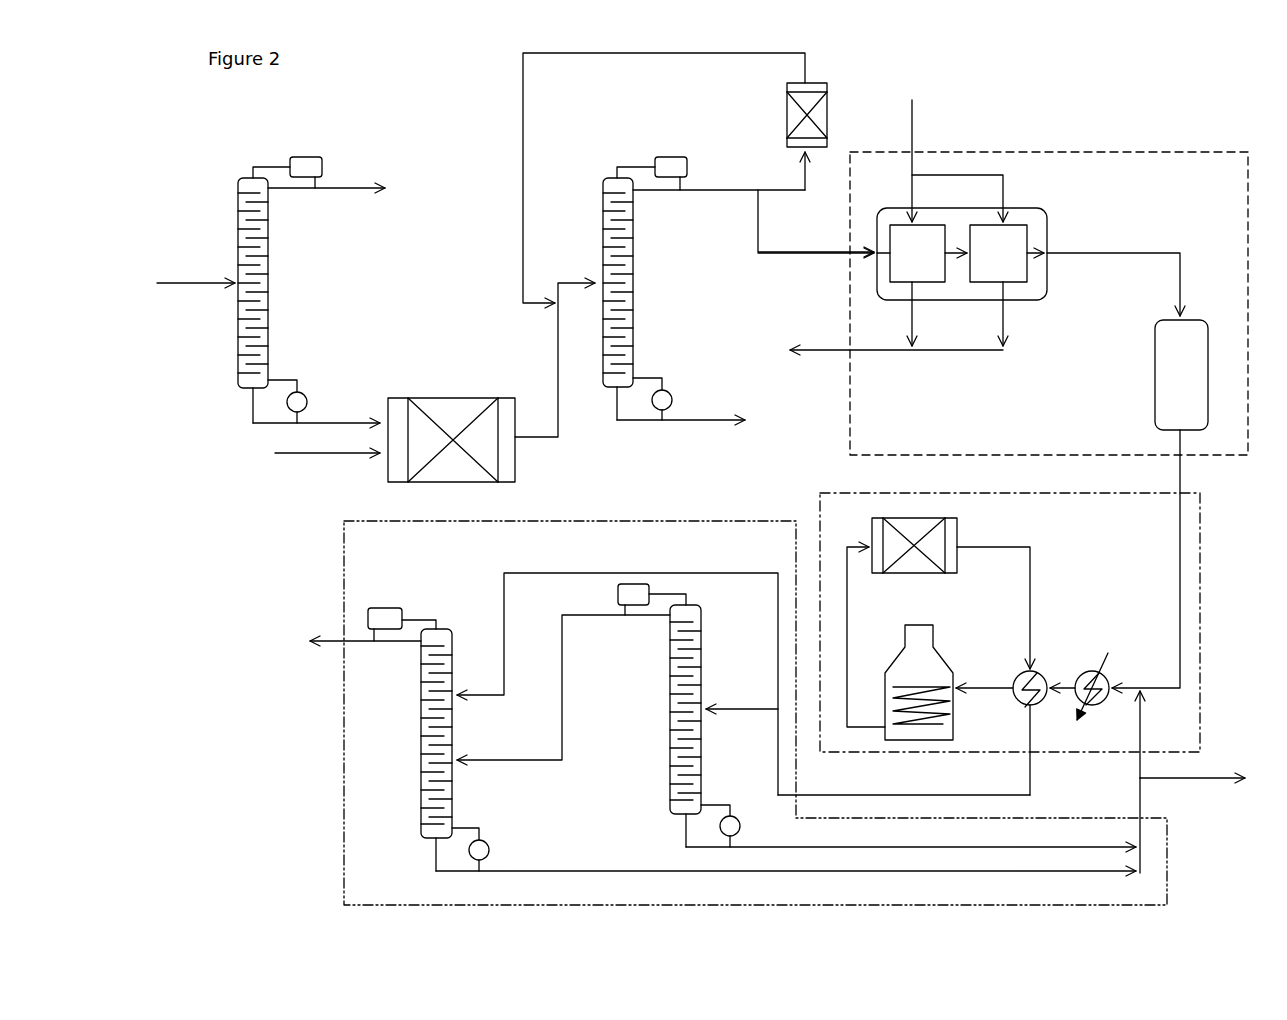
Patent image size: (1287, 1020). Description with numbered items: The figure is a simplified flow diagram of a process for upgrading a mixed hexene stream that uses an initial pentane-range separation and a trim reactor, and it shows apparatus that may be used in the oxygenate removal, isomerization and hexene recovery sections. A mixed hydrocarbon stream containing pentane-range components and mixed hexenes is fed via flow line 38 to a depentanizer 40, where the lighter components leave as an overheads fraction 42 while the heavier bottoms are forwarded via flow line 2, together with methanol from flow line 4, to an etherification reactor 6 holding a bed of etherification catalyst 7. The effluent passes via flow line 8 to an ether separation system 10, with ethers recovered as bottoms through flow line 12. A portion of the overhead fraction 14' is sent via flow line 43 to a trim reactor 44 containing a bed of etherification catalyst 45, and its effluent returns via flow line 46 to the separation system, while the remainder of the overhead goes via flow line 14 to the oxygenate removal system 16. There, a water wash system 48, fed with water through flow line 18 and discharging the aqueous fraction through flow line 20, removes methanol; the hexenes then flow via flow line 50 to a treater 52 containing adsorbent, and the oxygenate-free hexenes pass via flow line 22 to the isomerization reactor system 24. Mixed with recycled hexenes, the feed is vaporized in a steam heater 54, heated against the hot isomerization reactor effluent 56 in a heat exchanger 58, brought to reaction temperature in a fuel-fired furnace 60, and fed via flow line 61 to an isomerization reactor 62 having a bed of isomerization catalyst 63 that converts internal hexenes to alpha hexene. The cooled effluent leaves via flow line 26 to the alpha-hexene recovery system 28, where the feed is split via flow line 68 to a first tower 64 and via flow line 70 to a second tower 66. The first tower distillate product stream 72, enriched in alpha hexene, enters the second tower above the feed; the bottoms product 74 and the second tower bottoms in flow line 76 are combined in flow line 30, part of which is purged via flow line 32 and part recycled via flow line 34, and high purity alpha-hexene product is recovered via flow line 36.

The flow line 2 is at (326, 422).
The flow line 4 is at (320, 458).
The etherification reactor 6 is at (516, 402).
The bed of etherification catalyst 7 is at (448, 410).
The flow line 8 is at (554, 440).
The ether separation system 10 is at (603, 188).
The flow line 12 is at (708, 420).
The flow line 14 is at (816, 221).
The overhead fraction 14' is at (719, 170).
The oxygenate removal system 16 is at (1098, 148).
The flow line 18 is at (914, 134).
The flow line 20 is at (842, 354).
The flow line 22 is at (1183, 476).
The isomerization reactor system 24 is at (1204, 538).
The flow line 26 is at (1032, 788).
The 1-hexene recovery system 28 is at (802, 786).
The flow line 30 is at (1144, 808).
The flow line 32 is at (1216, 782).
The flow line 34 is at (1144, 730).
The flow line 36 is at (322, 638).
The flow line 38 is at (180, 286).
The depentanizer 40 is at (238, 186).
The overheads fraction 42 is at (352, 186).
The flow line 43 is at (815, 185).
The trim reactor 44 is at (787, 130).
The bed of etherification catalyst 45 is at (828, 122).
The flow line 46 is at (810, 70).
The water wash system 48 is at (1047, 218).
The flow line 50 is at (1122, 254).
The treater 52 is at (1181, 375).
The steam heater 54 is at (1092, 670).
The isomerization reactor effluent 56 is at (1034, 612).
The heat exchanger 58 is at (1018, 676).
The fuel-fired furnace 60 is at (898, 658).
The flow line 61 is at (850, 616).
The isomerization reactor 62 is at (960, 570).
The bed of isomerization catalyst 63 is at (914, 568).
The first tower 64 is at (668, 736).
The second tower 66 is at (455, 640).
The flow line 68 is at (724, 710).
The flow line 70 is at (722, 578).
The distillate product stream 72 is at (576, 626).
The bottoms product 74 is at (758, 846).
The flow line 76 is at (520, 870).